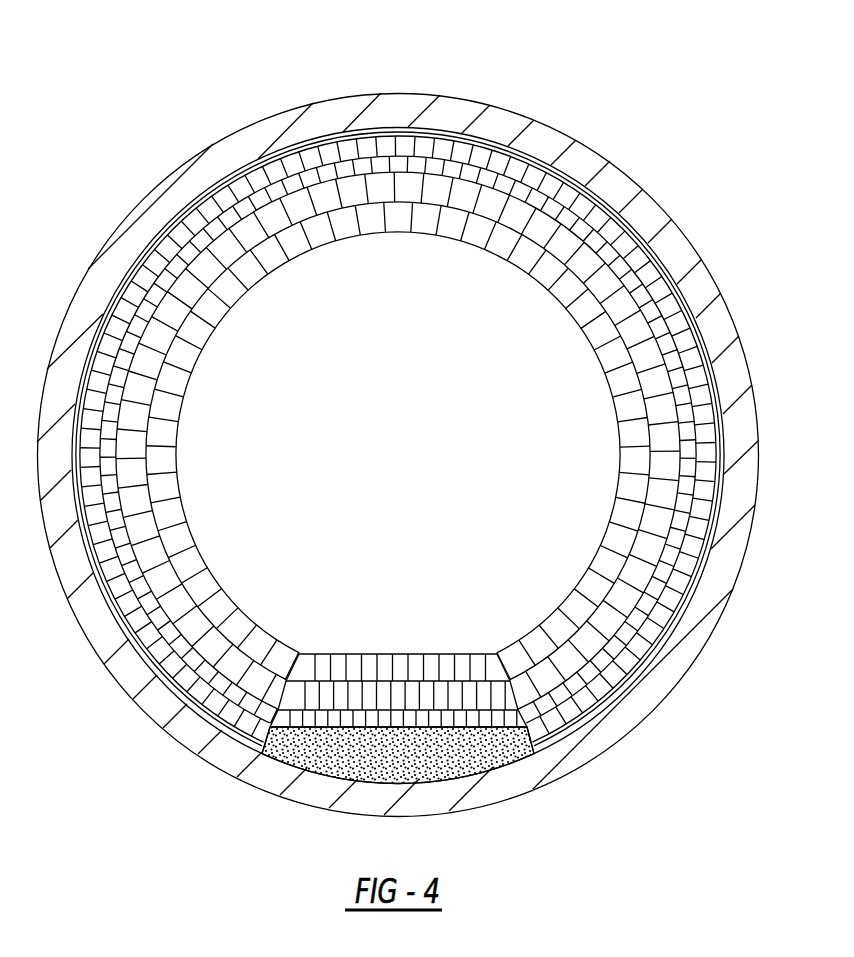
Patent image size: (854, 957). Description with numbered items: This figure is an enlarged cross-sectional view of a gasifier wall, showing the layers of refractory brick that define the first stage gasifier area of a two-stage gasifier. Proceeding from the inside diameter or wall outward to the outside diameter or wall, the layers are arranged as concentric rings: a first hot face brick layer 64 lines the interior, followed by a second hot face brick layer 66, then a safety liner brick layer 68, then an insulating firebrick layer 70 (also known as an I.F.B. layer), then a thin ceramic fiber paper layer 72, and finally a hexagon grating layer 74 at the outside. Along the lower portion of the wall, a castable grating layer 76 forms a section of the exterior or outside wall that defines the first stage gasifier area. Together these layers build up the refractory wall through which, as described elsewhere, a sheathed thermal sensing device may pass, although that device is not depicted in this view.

The first hot face brick layer 64 is at (368, 172).
The second hot face brick layer 66 is at (458, 199).
The safety liner brick layer 68 is at (518, 193).
The insulating firebrick layer 70 is at (583, 210).
The ceramic fiber paper layer 72 is at (630, 240).
The hexagon grating layer 74 is at (667, 263).
The castable grating layer 76 is at (428, 757).